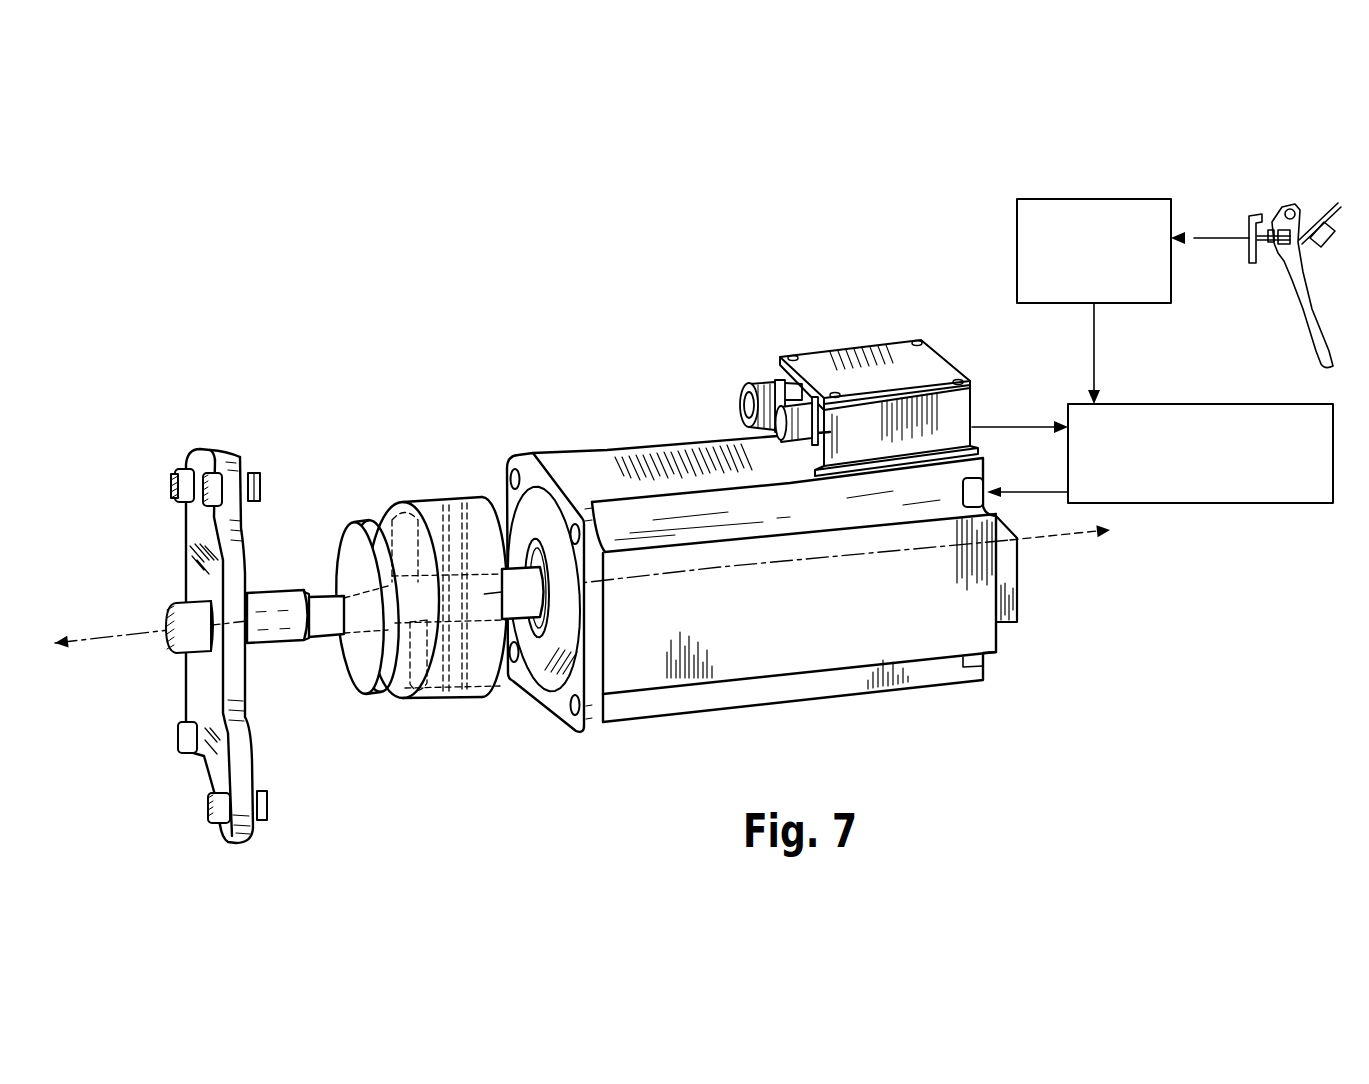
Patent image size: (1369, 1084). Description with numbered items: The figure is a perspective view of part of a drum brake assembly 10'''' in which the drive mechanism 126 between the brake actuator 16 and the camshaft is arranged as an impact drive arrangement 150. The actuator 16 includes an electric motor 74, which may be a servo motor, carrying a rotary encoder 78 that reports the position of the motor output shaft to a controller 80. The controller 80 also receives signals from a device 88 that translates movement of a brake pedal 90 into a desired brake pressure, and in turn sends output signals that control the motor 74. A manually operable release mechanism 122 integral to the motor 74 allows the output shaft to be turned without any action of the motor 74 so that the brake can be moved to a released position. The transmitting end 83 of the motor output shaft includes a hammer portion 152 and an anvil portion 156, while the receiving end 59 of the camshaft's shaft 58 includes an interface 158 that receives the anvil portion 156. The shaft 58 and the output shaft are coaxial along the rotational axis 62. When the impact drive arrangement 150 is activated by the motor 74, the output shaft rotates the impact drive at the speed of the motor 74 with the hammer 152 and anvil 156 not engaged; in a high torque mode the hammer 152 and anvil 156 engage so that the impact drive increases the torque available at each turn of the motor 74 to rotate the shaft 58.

The drum brake assembly 10'''' is at (587, 542).
The brake actuator 16 is at (1040, 556).
The shaft 58 is at (268, 603).
The receiving end 59 is at (310, 597).
The rotational axis 62 is at (128, 633).
The electric motor 74 is at (833, 650).
The rotary encoder 78 is at (855, 373).
The controller 80 is at (1196, 506).
The transmitting end 83 is at (522, 603).
The device 88 is at (1092, 225).
The brake pedal 90 is at (1290, 270).
The manually operable release mechanism 122 is at (1013, 627).
The drive mechanism 126 is at (406, 770).
The impact drive arrangement 150 is at (433, 456).
The hammer portion 152 is at (443, 710).
The anvil portion 156 is at (365, 673).
The interface 158 is at (317, 627).